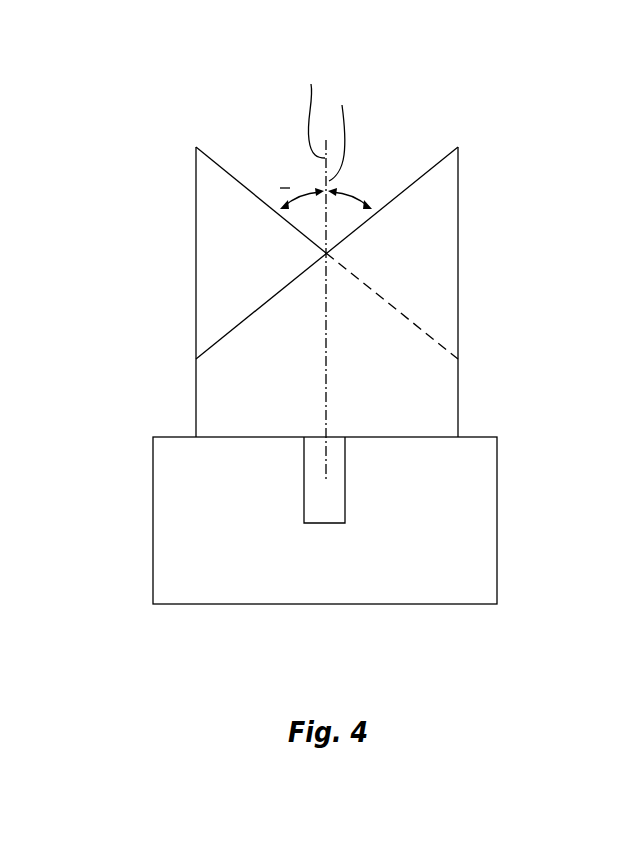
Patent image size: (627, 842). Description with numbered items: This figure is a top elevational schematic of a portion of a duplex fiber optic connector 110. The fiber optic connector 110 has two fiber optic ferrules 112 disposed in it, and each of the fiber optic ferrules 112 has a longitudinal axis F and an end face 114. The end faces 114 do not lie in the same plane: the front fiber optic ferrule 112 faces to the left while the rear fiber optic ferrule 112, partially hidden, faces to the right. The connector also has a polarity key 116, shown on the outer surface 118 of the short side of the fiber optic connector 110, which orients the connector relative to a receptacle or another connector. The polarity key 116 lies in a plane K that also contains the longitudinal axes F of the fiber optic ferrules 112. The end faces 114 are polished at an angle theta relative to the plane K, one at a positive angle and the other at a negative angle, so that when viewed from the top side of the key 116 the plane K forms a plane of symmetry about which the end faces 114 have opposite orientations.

The fiber optic connector 110 is at (360, 333).
The fiber optic ferrule 112 is at (197, 282).
The end face 114 is at (247, 189).
The polarity key 116 is at (345, 488).
The outer surface 118 is at (497, 518).